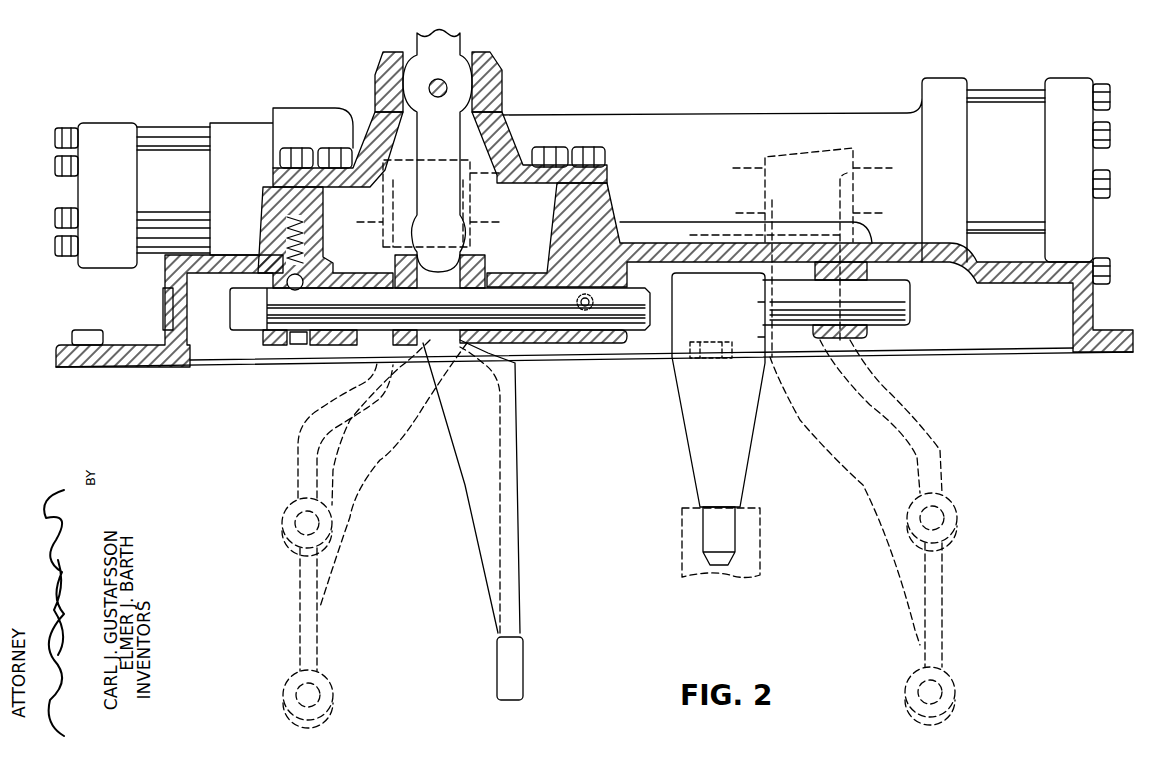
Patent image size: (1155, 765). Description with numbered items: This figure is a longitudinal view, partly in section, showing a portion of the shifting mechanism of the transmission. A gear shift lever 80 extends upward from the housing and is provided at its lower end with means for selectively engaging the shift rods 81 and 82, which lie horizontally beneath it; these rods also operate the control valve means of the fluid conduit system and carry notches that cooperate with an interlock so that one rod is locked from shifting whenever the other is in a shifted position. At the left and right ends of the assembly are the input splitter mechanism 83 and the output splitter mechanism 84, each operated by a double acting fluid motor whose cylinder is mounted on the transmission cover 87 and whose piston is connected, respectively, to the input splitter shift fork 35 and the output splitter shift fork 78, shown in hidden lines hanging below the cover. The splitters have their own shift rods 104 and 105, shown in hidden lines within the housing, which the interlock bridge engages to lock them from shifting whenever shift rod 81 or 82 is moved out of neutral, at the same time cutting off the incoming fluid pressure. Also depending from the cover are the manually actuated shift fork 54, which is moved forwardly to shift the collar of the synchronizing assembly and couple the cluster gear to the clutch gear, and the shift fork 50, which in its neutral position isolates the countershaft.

The input splitter shift fork 35 is at (303, 604).
The shift fork 50 is at (748, 543).
The manually actuated shift fork 54 is at (505, 487).
The output splitter shift fork 78 is at (936, 478).
The gear shift lever 80 is at (428, 50).
The shift rod 81 is at (643, 331).
The shift rod 82 is at (897, 316).
The input splitter mechanism 83 is at (103, 114).
The output splitter mechanism 84 is at (1040, 72).
The transmission cover 87 is at (130, 345).
The shift rod 104 is at (482, 202).
The shift rod 105 is at (750, 185).